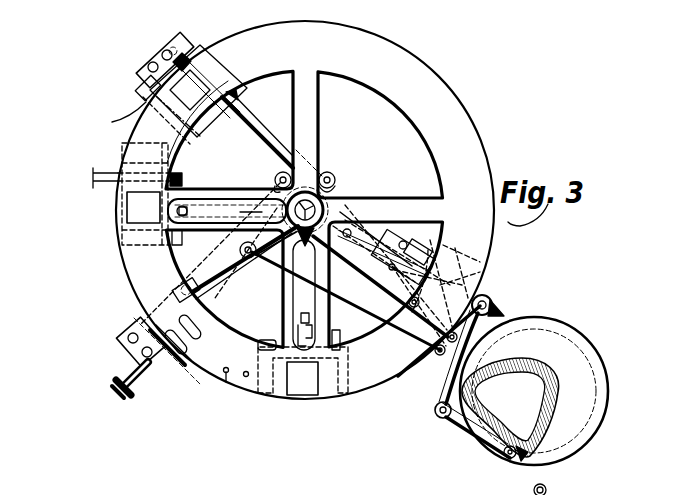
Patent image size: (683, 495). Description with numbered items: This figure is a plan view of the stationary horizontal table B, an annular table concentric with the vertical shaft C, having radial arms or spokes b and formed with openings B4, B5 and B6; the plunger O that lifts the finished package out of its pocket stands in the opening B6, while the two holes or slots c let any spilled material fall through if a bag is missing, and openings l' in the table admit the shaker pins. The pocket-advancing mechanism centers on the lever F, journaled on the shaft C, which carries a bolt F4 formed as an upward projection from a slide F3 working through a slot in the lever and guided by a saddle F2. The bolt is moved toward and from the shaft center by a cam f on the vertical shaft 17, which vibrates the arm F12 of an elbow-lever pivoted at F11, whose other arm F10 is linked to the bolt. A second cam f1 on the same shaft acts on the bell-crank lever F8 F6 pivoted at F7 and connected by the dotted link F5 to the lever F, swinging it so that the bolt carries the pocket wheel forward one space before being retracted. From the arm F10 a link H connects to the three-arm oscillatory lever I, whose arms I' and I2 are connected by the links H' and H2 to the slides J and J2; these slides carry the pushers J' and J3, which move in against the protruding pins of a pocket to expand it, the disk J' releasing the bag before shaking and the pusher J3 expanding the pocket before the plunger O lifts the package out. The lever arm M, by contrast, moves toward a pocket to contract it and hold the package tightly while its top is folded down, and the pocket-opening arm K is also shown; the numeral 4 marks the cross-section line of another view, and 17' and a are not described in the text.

The stationary horizontal table B is at (305, 206).
The radial arms or spokes b is at (258, 302).
The vertical shaft C is at (324, 182).
The lever arm M is at (296, 330).
The pocket-opening arm K is at (186, 206).
The lever bar 4 is at (358, 250).
The arm of three-arm lever I' is at (273, 174).
The arm of oscillatory lever I2 is at (334, 182).
The three-arm oscillatory lever I is at (251, 246).
The link H2 is at (262, 130).
The link H is at (275, 279).
The link H' is at (210, 254).
The lever F is at (342, 260).
The saddle F2 is at (440, 248).
The slide F3 is at (352, 215).
The bolt F4 is at (470, 262).
The link F5 is at (410, 300).
The arm of bell-crank lever F6 is at (424, 384).
The pivot of bell-crank lever F7 is at (440, 416).
The arm of bell-crank lever F8 is at (503, 455).
The arm of elbow-lever F10 is at (458, 339).
The pivot of elbow-lever F11 is at (492, 306).
The arm of elbow-lever F12 is at (495, 312).
The cam f is at (604, 383).
The cam f1 is at (607, 395).
The vertical shaft 17 is at (539, 395).
The cam opening 17' is at (508, 401).
The opening in table B5 is at (310, 397).
The opening in table B4 is at (127, 212).
The opening in table B6 is at (226, 76).
The slide J2 is at (157, 62).
The pusher J3 is at (188, 50).
The plate or plunger O is at (122, 115).
The slide J is at (133, 354).
The disk or pusher J' is at (167, 355).
The holes or slots c is at (200, 318).
The worm wheel l' is at (236, 378).
The shaft a is at (536, 249).